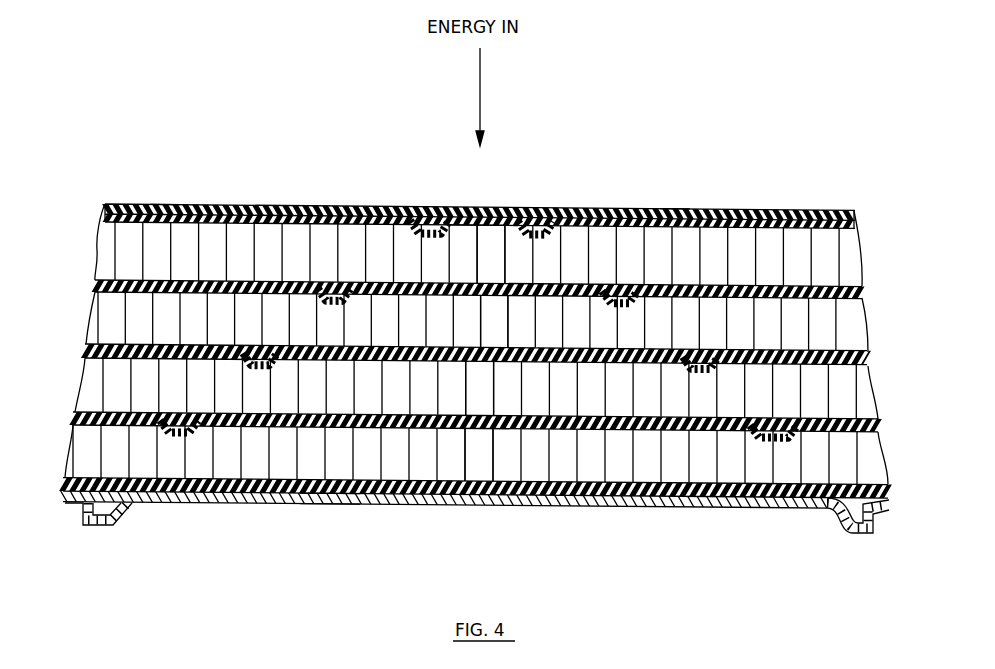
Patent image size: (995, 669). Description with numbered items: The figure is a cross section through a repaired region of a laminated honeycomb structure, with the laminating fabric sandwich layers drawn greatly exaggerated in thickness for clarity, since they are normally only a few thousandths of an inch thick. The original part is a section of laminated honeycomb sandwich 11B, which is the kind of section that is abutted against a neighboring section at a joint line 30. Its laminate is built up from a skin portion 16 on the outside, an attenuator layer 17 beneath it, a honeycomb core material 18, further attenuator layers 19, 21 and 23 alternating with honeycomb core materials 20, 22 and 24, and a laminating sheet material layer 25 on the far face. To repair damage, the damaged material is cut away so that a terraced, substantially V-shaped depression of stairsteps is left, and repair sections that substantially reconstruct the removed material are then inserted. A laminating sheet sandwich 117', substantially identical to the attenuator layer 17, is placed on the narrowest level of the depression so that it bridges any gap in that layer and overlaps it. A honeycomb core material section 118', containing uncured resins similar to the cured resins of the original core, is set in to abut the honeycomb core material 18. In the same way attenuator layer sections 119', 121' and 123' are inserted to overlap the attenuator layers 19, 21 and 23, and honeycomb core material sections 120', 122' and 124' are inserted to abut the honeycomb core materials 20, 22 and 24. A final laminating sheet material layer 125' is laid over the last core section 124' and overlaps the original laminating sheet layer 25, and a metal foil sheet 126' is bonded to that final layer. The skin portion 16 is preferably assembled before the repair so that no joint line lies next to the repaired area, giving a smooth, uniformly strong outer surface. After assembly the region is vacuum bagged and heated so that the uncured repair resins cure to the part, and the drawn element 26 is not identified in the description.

The section of laminated honeycomb sandwich 11B is at (165, 192).
The skin portion 16 is at (853, 210).
The attenuator layer 17 is at (858, 229).
The honeycomb core material 18 is at (110, 244).
The attenuator layer 19 is at (862, 294).
The honeycomb core material 20 is at (112, 315).
The attenuator layer 21 is at (864, 362).
The honeycomb core material 22 is at (112, 386).
The attenuator layer 23 is at (878, 424).
The honeycomb core material 24 is at (84, 443).
The laminating sheet material layer 25 is at (874, 493).
The bottom sheet with flange 26 is at (878, 514).
The joint line 30 is at (478, 211).
The laminating sheet sandwich 117' is at (476, 189).
The honeycomb core material section 118' is at (483, 254).
The attenuator layer section 119' is at (477, 312).
The honeycomb core material section 120' is at (482, 321).
The attenuator layer section 121' is at (480, 377).
The honeycomb core material section 122' is at (473, 388).
The attenuator layer section 123' is at (478, 442).
The honeycomb core material section 124' is at (478, 454).
The laminating sheet material layer 125' is at (131, 529).
The metal foil sheet 126' is at (330, 526).